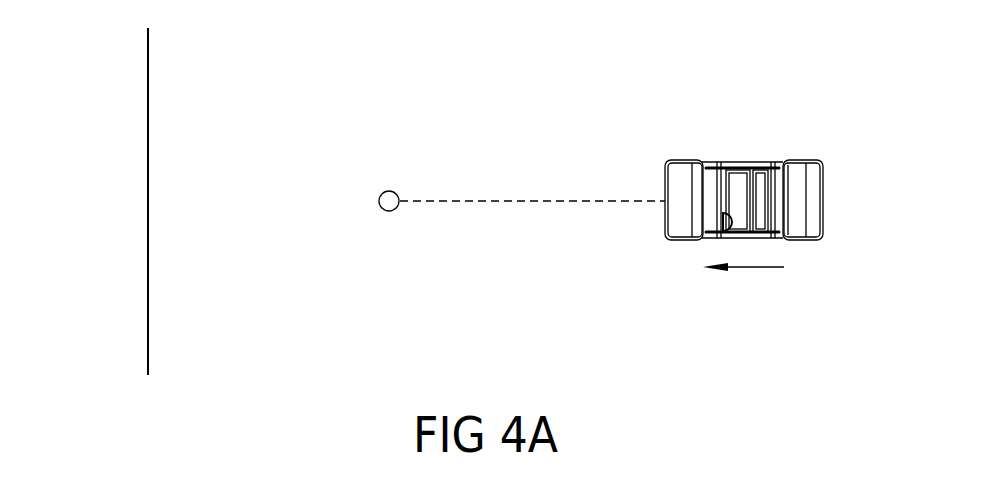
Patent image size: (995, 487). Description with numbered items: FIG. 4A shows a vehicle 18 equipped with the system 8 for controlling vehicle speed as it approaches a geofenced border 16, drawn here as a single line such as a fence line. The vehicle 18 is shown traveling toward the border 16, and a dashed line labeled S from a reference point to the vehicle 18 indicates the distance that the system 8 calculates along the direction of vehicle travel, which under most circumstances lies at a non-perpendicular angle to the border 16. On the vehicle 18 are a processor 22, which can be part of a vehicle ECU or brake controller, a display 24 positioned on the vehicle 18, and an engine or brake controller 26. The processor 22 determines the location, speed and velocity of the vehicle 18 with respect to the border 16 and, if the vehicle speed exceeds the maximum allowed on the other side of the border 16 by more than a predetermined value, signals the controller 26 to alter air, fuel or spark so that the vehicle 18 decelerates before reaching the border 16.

The system 8 is at (396, 56).
The border 16 is at (110, 187).
The vehicle 18 is at (645, 132).
The processor 22 is at (816, 211).
The display 24 is at (816, 224).
The engine or brake controller 26 is at (792, 210).